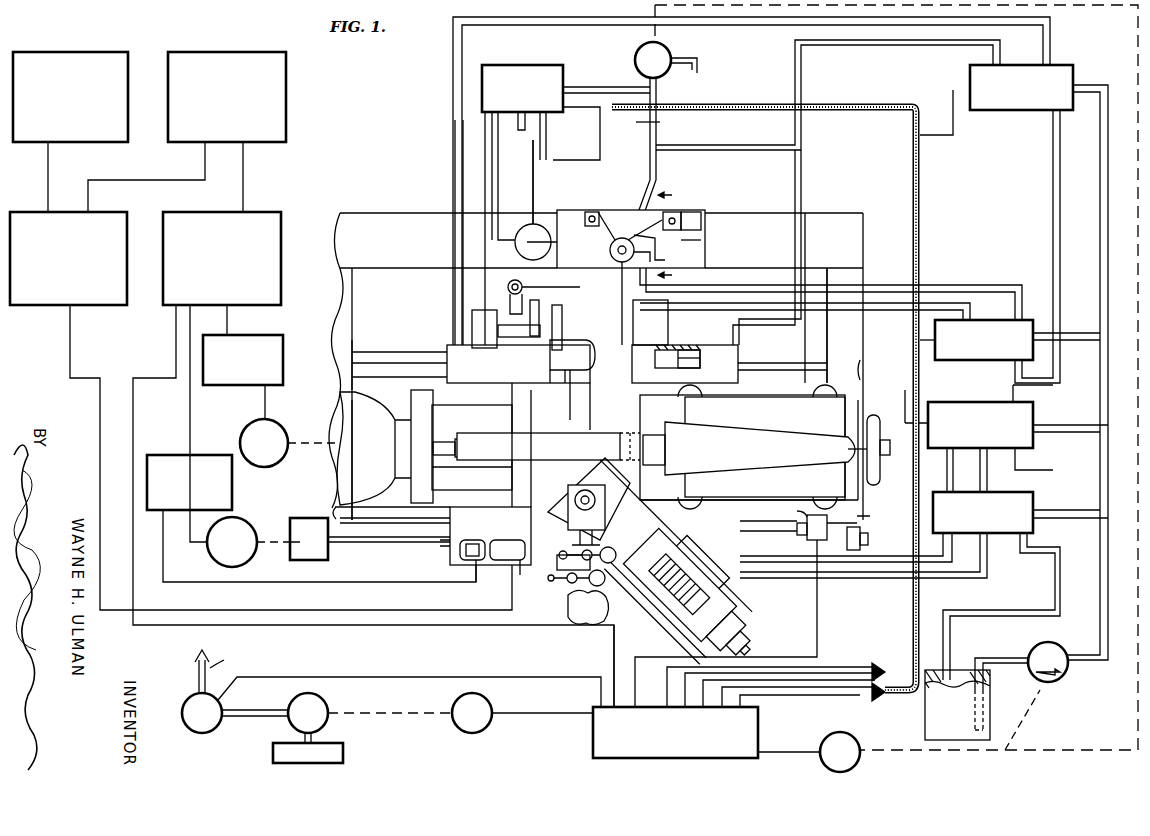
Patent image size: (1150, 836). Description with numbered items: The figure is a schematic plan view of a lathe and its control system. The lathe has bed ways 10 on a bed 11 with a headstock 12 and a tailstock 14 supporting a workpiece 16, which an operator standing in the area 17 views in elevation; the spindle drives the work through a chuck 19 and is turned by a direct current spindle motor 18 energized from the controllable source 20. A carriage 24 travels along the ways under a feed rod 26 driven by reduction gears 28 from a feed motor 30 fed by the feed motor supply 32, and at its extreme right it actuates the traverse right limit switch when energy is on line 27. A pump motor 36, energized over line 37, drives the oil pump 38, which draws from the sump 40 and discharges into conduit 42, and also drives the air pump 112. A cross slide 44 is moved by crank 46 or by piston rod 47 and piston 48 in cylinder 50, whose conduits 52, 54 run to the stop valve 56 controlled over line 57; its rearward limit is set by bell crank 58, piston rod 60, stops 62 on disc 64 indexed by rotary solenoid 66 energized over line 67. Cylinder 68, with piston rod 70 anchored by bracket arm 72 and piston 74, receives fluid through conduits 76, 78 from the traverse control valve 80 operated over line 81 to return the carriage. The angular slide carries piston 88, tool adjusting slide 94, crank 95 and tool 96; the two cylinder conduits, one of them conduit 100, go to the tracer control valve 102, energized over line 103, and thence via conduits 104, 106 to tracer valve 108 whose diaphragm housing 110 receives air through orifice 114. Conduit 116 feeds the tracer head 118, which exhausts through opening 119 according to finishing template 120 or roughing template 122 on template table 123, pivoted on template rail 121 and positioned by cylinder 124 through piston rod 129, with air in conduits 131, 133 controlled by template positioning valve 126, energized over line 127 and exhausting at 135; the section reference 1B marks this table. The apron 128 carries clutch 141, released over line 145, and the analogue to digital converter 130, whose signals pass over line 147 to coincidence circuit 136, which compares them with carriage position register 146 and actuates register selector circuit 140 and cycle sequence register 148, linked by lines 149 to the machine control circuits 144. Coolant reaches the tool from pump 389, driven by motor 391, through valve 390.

The bed ways 10 is at (336, 380).
The bed 11 is at (860, 410).
The headstock 12 is at (372, 432).
The tailstock 14 is at (736, 450).
The workpiece 16 is at (584, 425).
The operator area 17 is at (608, 622).
The spindle motor 18 is at (250, 426).
The chuck 19 is at (433, 428).
The controllable energization source 20 is at (258, 335).
The carriage 24 is at (450, 546).
The feed rod 26 is at (372, 548).
The line 27 is at (825, 594).
The reduction gears 28 is at (309, 518).
The feed motor 30 is at (238, 518).
The feed motor supply 32 is at (232, 488).
The pump motor 36 is at (860, 758).
The line 37 is at (775, 755).
The oil pump 38 is at (1062, 678).
The hydraulic sump 40 is at (1000, 716).
The conduit 42 is at (1100, 212).
The cross slide 44 is at (522, 526).
The crank 46 is at (564, 586).
The piston rod 47 is at (558, 374).
The piston 48 is at (547, 352).
The cylinder 50 is at (572, 374).
The hydraulic conduit 52 is at (720, 310).
The hydraulic conduit 54 is at (648, 292).
The stop valve 56 is at (1018, 320).
The electrical line 57 is at (930, 360).
The bell crank 58 is at (508, 300).
The piston rod 60 is at (570, 316).
The stops 62 is at (542, 316).
The disc 64 is at (519, 328).
The rotary stepping solenoid 66 is at (484, 329).
The line 67 is at (478, 306).
The cylinder 68 is at (447, 338).
The piston rod 70 is at (395, 351).
The bracket arm 72 is at (348, 332).
The piston 74 is at (692, 350).
The hydraulic conduit 76 is at (455, 313).
The hydraulic conduit 78 is at (790, 330).
The traverse control valve 80 is at (1023, 110).
The line 81 is at (835, 661).
The piston 88 is at (599, 607).
The tool adjusting slide 94 is at (602, 518).
The crank 95 is at (612, 552).
The tool 96 is at (562, 485).
The hydraulic conduit 100 is at (970, 582).
The tracer control valve 102 is at (1005, 538).
The line 103 is at (861, 694).
The conduit 104 is at (982, 466).
The conduit 106 is at (966, 470).
The tracer valve 108 is at (998, 402).
The housing 110 is at (933, 402).
The air pump 112 is at (635, 58).
The orifice 114 is at (660, 122).
The conduit 116 is at (656, 170).
The tracer head 118 is at (631, 239).
The exhaust opening 119 is at (660, 250).
The finishing template 120 is at (701, 229).
The template rail 121 is at (402, 213).
The roughing template 122 is at (701, 249).
The template table 123 is at (575, 207).
The cylinder 124 is at (533, 222).
The template positioning solenoid valve 126 is at (546, 64).
The line 127 is at (574, 112).
The front apron 128 is at (510, 580).
The piston rod 129 is at (523, 254).
The analogue to digital converter 130 is at (507, 550).
The pneumatic conduit 131 is at (485, 138).
The pneumatic conduit 133 is at (536, 186).
The exhaust 135 is at (519, 134).
The carriage position coincidence circuit 136 is at (98, 305).
The register selector circuit 140 is at (286, 132).
The electromagnetic clutch 141 is at (466, 540).
The machine control circuits 144 is at (593, 748).
The line 145 is at (383, 582).
The carriage position register 146 is at (95, 155).
The line 147 is at (70, 352).
The cycle sequence register 148 is at (272, 212).
The lines 149 is at (153, 378).
The coolant pump 389 is at (328, 710).
The coolant valve 390 is at (190, 735).
The coolant pump motor 391 is at (492, 708).
The section reference 1B is at (692, 275).